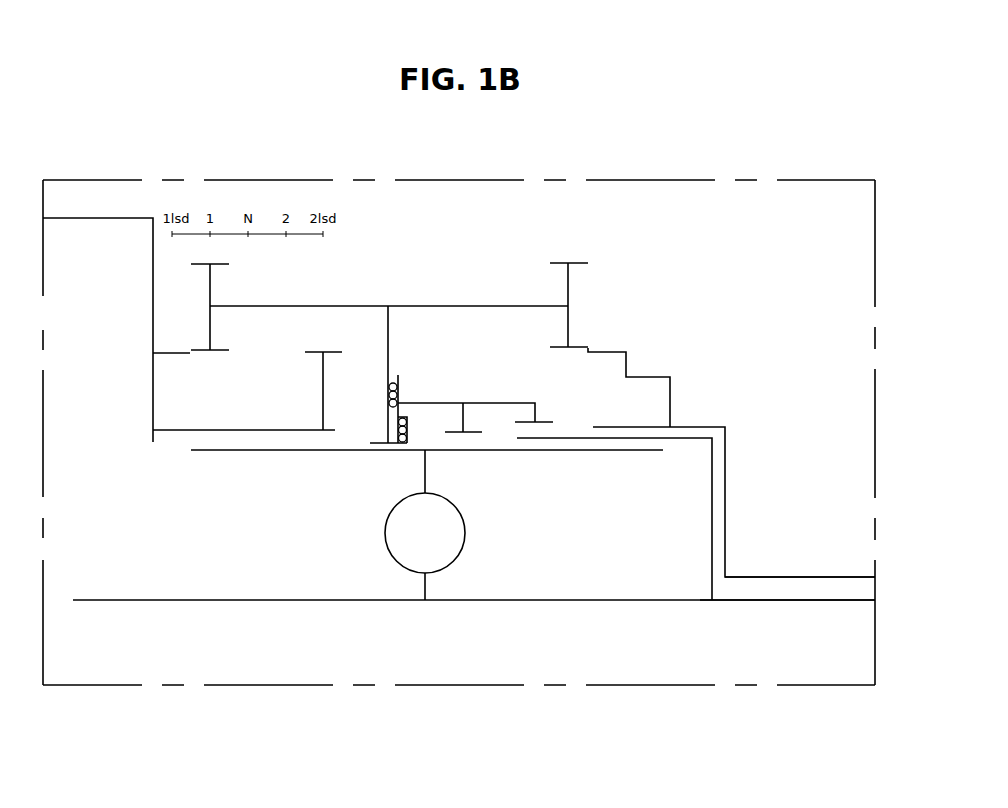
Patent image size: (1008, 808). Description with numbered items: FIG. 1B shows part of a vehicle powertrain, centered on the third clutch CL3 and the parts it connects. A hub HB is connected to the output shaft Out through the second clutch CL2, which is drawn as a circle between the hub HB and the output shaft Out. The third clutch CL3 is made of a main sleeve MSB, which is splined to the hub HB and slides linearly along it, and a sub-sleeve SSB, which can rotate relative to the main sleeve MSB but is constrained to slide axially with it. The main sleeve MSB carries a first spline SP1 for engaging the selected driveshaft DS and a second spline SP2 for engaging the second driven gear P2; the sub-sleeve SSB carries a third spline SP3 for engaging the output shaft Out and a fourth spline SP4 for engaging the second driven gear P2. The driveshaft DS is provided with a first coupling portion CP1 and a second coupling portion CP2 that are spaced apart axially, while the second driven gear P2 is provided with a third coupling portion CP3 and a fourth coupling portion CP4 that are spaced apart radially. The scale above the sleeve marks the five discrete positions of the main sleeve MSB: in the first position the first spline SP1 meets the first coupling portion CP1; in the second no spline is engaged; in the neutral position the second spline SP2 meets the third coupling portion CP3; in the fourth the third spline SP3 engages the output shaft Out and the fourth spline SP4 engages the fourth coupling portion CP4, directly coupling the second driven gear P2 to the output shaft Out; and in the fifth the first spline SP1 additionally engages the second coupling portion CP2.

The driveshaft DS is at (105, 218).
The first coupling portion CP1 is at (173, 353).
The second coupling portion CP2 is at (310, 352).
The third coupling portion CP3 is at (615, 352).
The fourth coupling portion CP4 is at (613, 427).
The first spline SP1 is at (218, 352).
The second spline SP2 is at (568, 349).
The third spline SP3 is at (472, 432).
The fourth spline SP4 is at (545, 422).
The third clutch CL3 is at (422, 226).
The main sleeve MSB is at (407, 306).
The sub-sleeve SSB is at (495, 403).
The hub HB is at (425, 470).
The second clutch CL2 is at (425, 533).
The second driven gear P2 is at (805, 577).
The output shaft Out is at (793, 600).